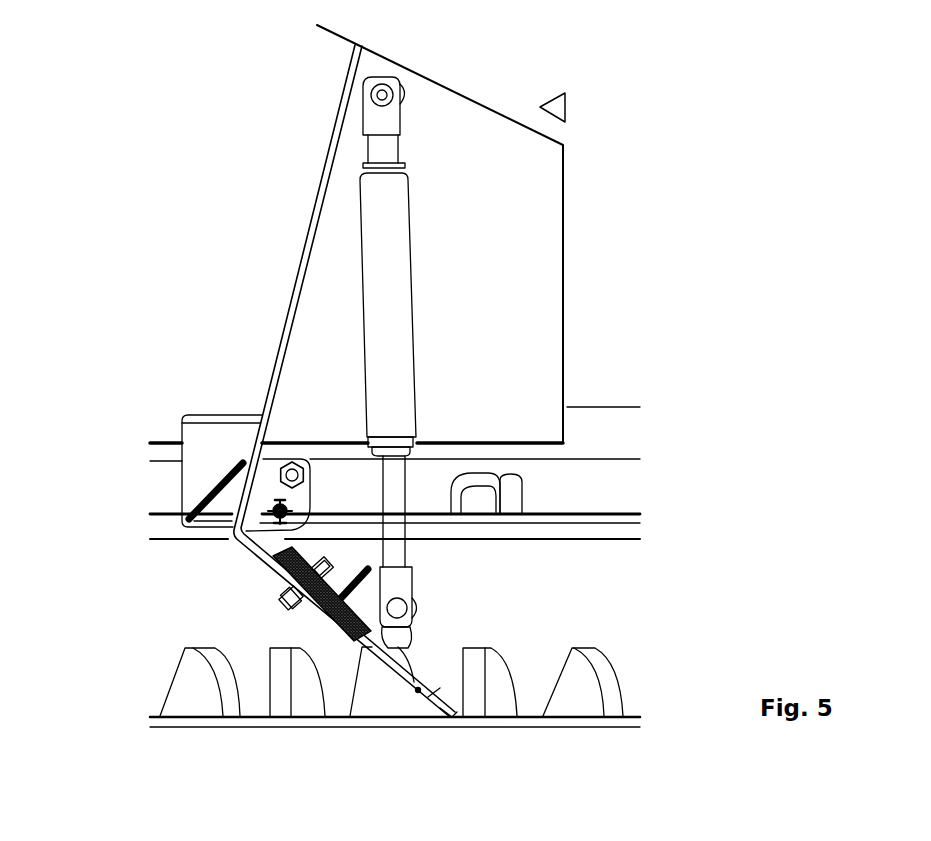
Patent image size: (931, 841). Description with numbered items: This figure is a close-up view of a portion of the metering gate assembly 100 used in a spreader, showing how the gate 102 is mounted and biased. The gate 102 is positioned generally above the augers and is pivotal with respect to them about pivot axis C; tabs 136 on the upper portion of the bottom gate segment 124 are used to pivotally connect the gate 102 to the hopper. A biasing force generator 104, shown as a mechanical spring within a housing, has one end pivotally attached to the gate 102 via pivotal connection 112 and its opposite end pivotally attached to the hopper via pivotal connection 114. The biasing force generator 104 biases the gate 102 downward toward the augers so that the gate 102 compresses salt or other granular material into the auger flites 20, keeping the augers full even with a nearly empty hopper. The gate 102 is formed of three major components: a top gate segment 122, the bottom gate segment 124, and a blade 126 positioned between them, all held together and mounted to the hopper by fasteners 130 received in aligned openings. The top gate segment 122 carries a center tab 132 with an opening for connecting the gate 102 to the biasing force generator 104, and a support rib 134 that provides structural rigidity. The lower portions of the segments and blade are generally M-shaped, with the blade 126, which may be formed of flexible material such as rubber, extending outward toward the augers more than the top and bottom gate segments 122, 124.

The metering gate assembly 100 is at (137, 208).
The flites 20 is at (187, 663).
The gate 102 is at (258, 588).
The biasing force generator 104 is at (412, 310).
The pivotal connection 112 is at (400, 604).
The pivotal connection 114 is at (384, 95).
The top gate segment 122 is at (442, 688).
The bottom gate segment 124 is at (350, 655).
The blade 126 is at (419, 692).
The fasteners 130 is at (285, 606).
The center tab 132 is at (388, 640).
The support rib 134 is at (357, 566).
The tabs 136 is at (262, 495).
The pivot axis C is at (272, 511).